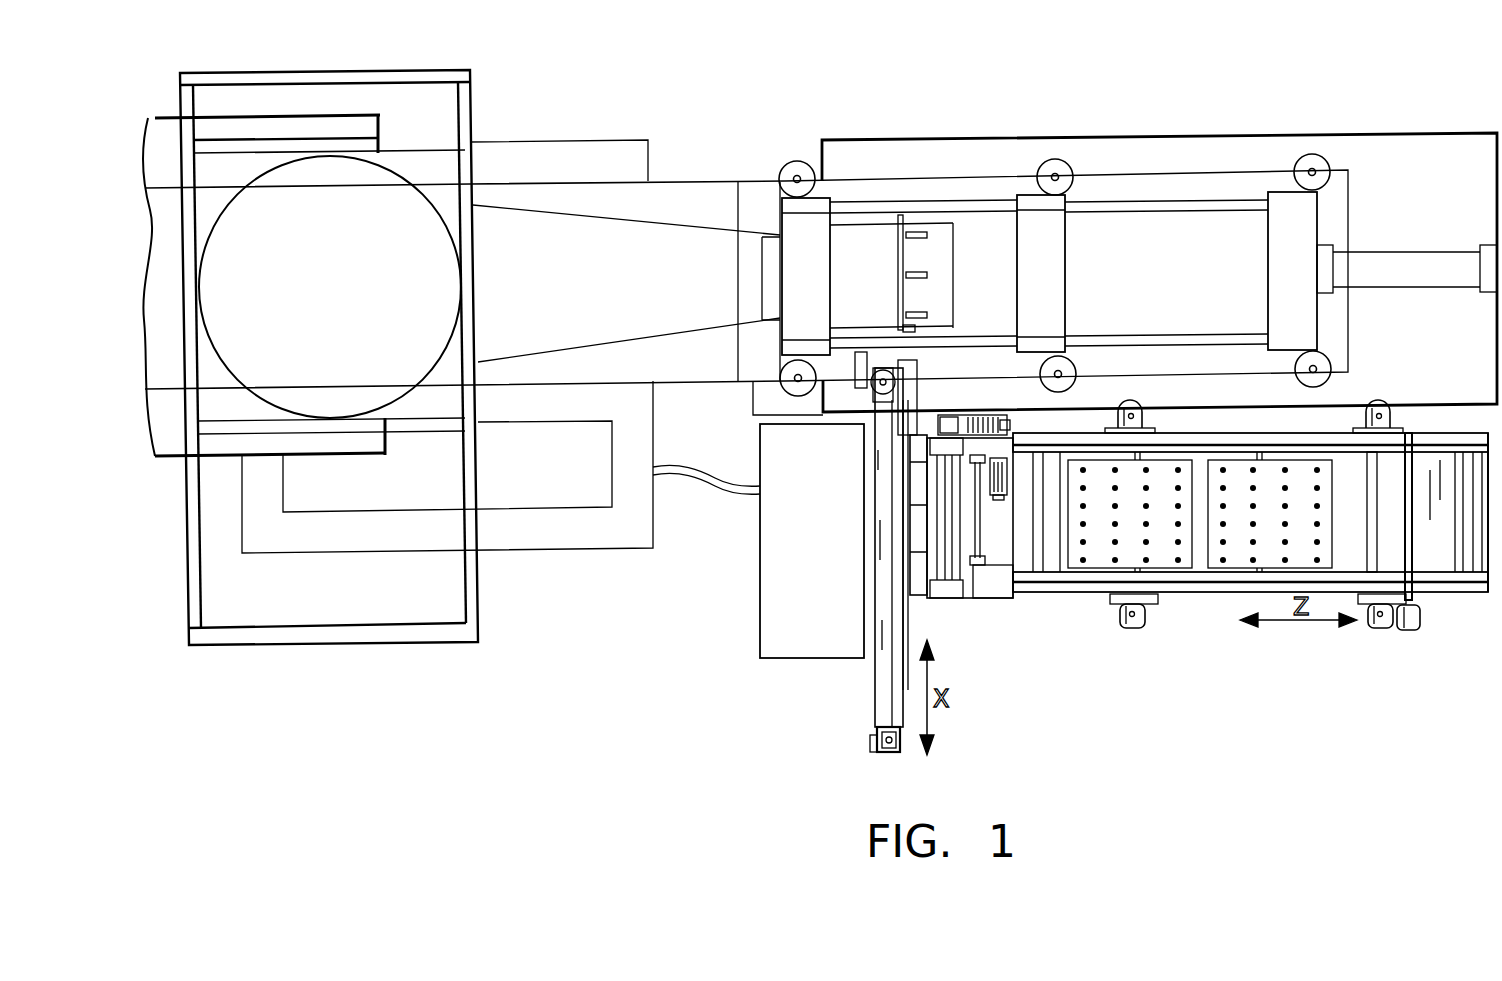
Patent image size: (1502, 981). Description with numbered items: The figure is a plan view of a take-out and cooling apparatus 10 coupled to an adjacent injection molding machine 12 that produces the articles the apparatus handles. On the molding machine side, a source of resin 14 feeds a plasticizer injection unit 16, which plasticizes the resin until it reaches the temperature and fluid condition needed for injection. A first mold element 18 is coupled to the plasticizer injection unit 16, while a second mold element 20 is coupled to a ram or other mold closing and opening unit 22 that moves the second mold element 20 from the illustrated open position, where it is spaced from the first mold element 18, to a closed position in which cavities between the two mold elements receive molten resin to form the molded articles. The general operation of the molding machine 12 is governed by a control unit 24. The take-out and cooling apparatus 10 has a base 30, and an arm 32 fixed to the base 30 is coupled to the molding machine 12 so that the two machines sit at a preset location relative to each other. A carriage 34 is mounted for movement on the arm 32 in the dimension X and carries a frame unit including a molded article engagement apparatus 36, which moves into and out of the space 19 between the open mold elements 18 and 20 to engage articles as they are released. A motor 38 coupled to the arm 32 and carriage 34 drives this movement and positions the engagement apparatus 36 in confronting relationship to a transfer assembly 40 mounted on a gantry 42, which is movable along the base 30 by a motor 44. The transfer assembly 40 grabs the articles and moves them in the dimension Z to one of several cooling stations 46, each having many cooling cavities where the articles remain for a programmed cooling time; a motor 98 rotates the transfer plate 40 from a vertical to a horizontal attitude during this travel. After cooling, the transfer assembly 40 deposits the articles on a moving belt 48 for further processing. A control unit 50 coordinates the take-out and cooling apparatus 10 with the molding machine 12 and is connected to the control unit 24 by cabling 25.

The take-out and cooling apparatus 10 is at (757, 700).
The injection molding machine 12 is at (808, 112).
The source of resin 14 is at (397, 213).
The plasticizer injection unit 16 is at (568, 252).
The first mold element 18 is at (887, 242).
The space 19 is at (945, 290).
The second mold element 20 is at (988, 230).
The mold closing and opening unit 22 is at (1140, 243).
The control unit 24 is at (573, 487).
The cabling 25 is at (720, 480).
The base 30 is at (1152, 600).
The arm 32 is at (887, 673).
The carriage 34 is at (908, 391).
The molded article engagement apparatus 36 is at (913, 223).
The motor 38 is at (887, 752).
The transfer assembly 40 is at (910, 493).
The gantry 42 is at (1033, 583).
The motor 44 is at (1410, 630).
The cooling stations 46 is at (1238, 552).
The moving belt 48 is at (1428, 558).
The control unit 50 is at (805, 600).
The motor 98 is at (977, 410).